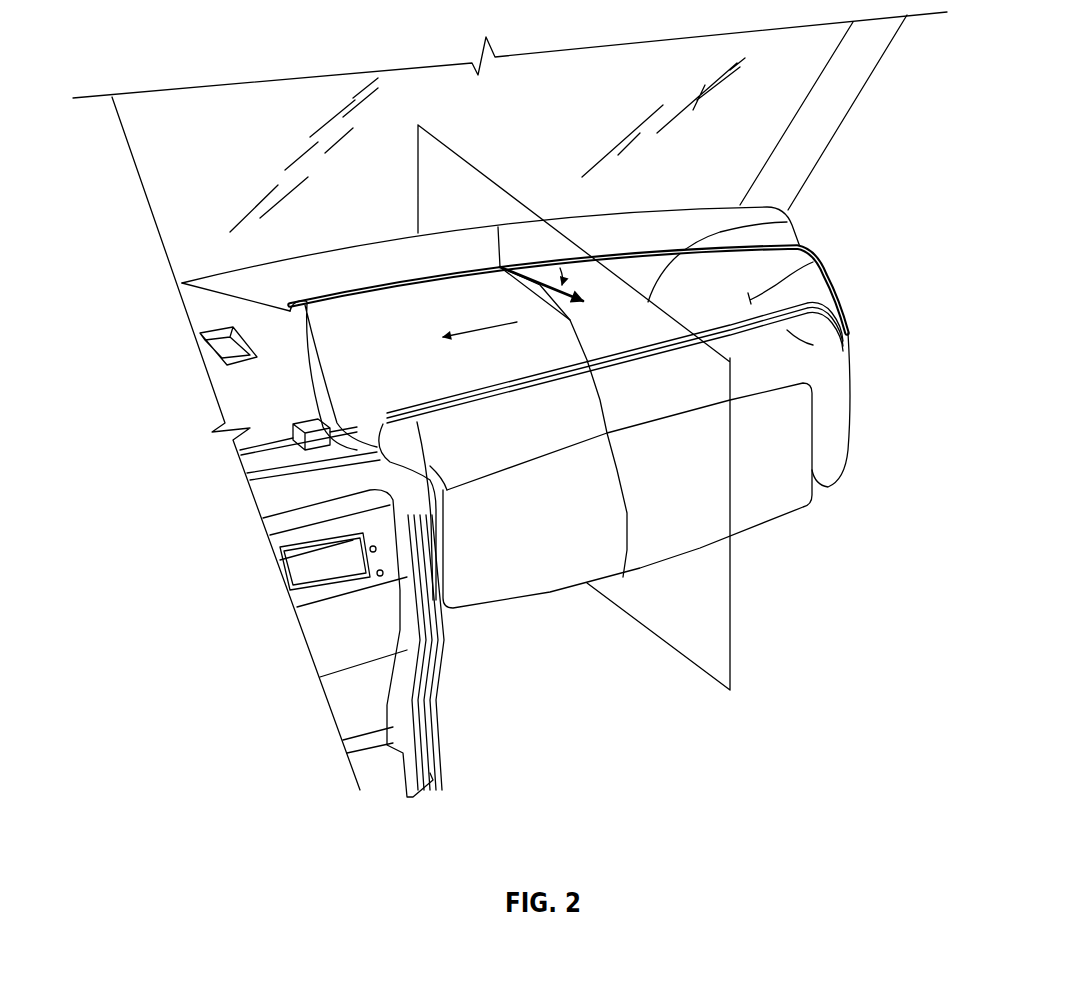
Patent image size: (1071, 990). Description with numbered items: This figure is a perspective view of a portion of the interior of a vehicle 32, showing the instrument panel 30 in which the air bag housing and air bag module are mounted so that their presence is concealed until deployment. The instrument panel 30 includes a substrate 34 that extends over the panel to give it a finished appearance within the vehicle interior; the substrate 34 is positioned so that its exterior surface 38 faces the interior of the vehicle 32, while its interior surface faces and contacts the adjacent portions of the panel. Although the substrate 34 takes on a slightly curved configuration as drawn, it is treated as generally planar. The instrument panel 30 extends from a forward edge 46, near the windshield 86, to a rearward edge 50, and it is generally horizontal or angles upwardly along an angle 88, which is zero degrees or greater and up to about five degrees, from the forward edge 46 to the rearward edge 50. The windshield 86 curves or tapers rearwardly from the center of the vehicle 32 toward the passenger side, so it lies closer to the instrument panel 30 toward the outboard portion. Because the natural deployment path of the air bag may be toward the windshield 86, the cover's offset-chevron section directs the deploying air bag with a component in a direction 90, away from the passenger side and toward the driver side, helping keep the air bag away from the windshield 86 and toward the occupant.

The instrument panel 30 is at (412, 301).
The vehicle 32 is at (851, 201).
The substrate 34 is at (787, 222).
The exterior surface 38 is at (813, 262).
The forward edge 46 is at (633, 210).
The rearward edge 50 is at (813, 345).
The windshield 86 is at (655, 94).
The angle 88 is at (547, 311).
The direction 90 is at (489, 326).